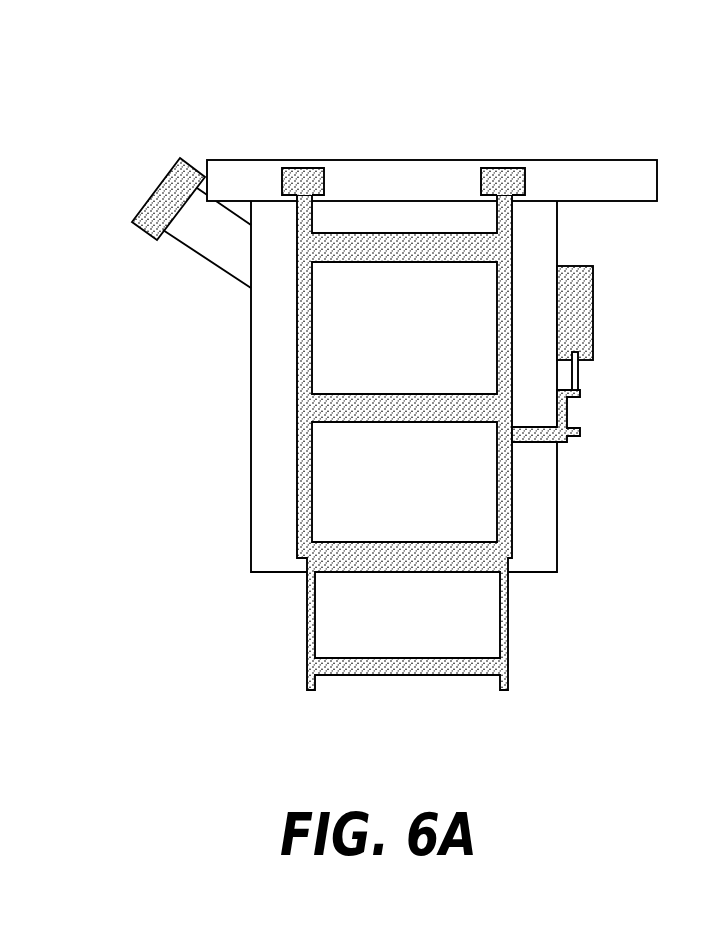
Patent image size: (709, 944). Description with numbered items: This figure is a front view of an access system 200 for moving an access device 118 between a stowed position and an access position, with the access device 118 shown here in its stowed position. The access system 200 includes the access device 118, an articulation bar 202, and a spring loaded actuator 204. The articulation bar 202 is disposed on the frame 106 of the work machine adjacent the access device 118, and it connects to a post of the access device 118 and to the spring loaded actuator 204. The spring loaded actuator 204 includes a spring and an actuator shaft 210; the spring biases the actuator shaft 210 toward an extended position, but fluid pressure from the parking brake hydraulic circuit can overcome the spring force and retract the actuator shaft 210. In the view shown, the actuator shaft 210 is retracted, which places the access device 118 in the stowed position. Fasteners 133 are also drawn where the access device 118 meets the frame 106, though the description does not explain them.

The access system 200 is at (617, 153).
The frame 106 is at (422, 176).
The access device 118 is at (302, 365).
The fastener 133 is at (306, 181).
The spring loaded actuator 204 is at (595, 293).
The articulation bar 202 is at (562, 413).
The actuator shaft 210 is at (578, 378).